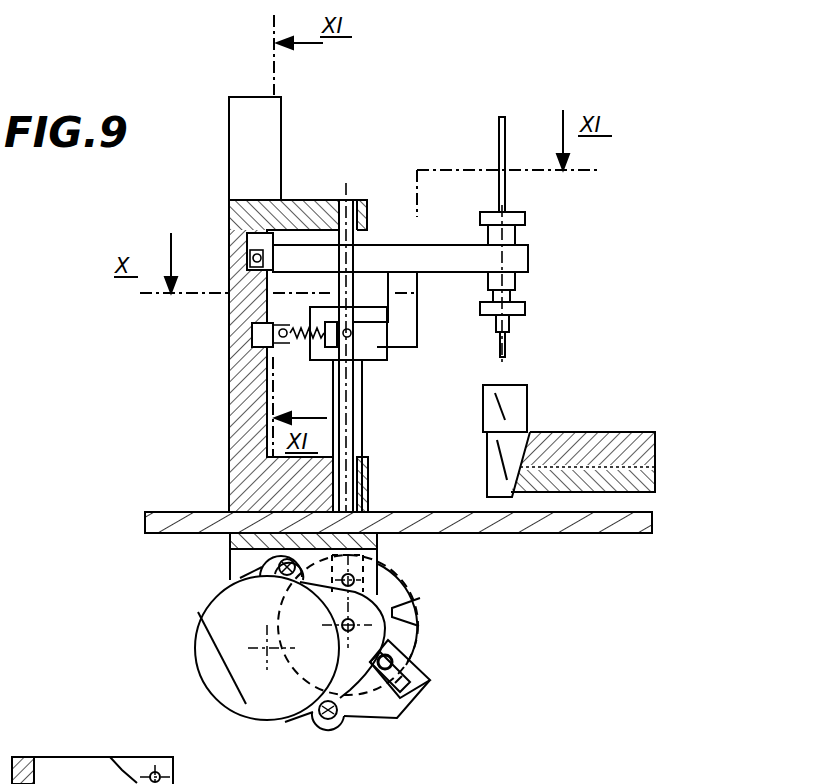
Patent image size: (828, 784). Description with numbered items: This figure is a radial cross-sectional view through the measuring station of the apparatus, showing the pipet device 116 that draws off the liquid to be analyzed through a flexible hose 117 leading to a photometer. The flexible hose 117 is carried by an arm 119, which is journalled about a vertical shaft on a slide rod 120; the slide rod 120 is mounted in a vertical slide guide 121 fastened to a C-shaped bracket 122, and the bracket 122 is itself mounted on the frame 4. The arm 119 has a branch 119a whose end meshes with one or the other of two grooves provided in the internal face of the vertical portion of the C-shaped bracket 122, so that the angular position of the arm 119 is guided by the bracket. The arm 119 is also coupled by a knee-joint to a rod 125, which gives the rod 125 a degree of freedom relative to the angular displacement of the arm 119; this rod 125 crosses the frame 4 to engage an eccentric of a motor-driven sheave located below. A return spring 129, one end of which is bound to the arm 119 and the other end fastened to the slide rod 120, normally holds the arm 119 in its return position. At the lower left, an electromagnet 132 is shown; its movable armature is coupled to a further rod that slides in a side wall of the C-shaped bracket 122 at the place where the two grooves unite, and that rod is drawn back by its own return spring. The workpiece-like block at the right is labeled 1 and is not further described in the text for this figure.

The workpiece 1 is at (569, 439).
The frame 4 is at (200, 512).
The pipet device 116 is at (572, 300).
The flexible hose 117 is at (498, 148).
The arm 119 is at (528, 253).
The branch 119a is at (293, 250).
The slide rod 120 is at (372, 362).
The vertical slide guide 121 is at (364, 235).
The C-shaped bracket 122 is at (312, 200).
The rod 125 is at (367, 430).
The return spring 129 is at (305, 346).
The electromagnet 132 is at (90, 783).